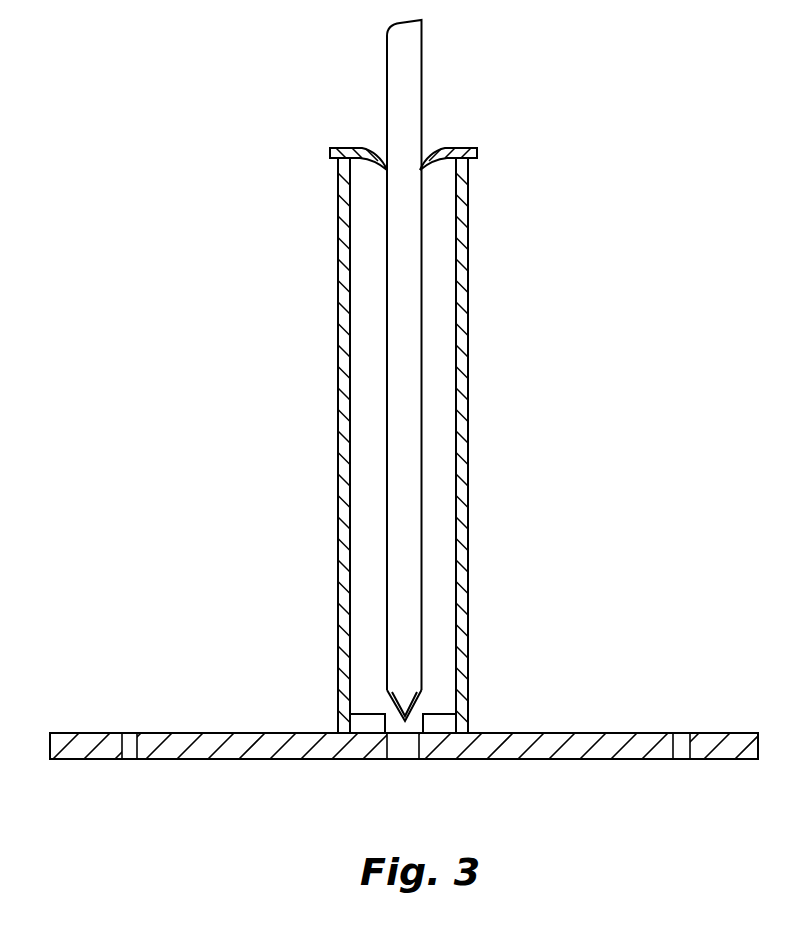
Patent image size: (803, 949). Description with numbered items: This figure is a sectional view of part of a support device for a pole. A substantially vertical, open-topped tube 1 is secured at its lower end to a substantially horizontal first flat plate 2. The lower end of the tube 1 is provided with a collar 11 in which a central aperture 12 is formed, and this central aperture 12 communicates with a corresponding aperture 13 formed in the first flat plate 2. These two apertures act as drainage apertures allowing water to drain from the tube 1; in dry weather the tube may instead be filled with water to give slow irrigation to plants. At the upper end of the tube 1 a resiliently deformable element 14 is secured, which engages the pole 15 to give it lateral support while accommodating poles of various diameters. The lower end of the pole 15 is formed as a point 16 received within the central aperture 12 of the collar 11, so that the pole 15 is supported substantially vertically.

The tube 1 is at (469, 292).
The first flat plate 2 is at (629, 733).
The collar 11 is at (377, 713).
The central aperture 12 is at (428, 724).
The aperture 13 is at (402, 750).
The resiliently deformable element 14 is at (462, 150).
The pole 15 is at (412, 70).
The point 16 is at (392, 700).